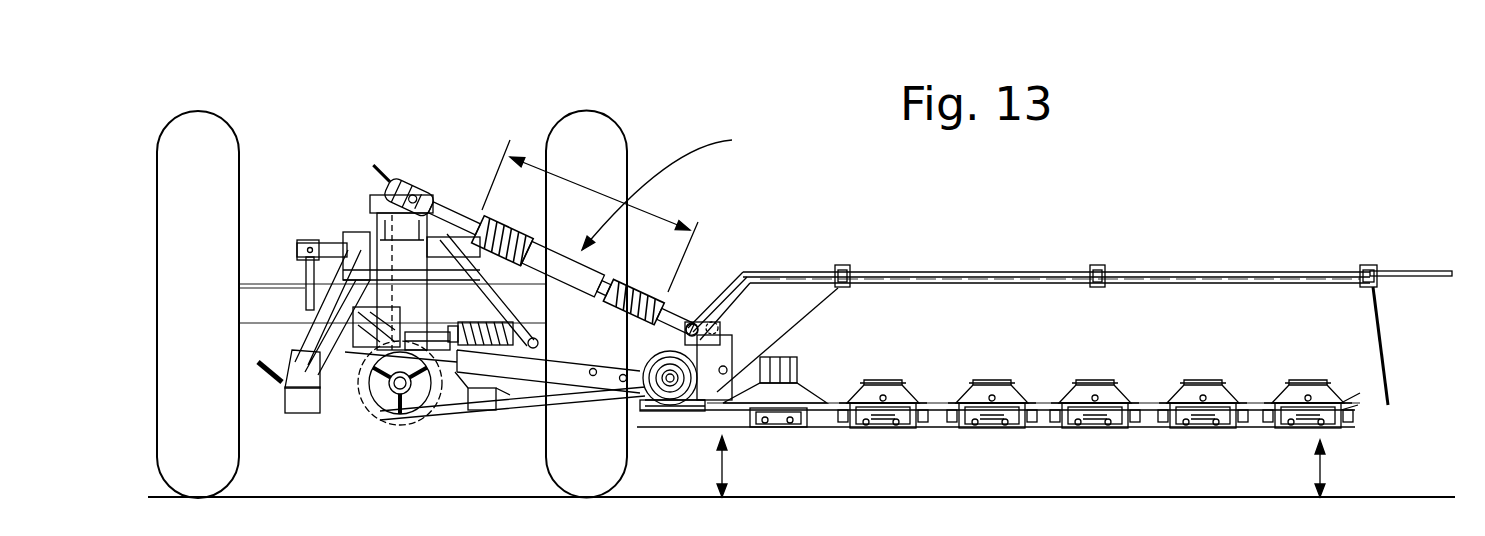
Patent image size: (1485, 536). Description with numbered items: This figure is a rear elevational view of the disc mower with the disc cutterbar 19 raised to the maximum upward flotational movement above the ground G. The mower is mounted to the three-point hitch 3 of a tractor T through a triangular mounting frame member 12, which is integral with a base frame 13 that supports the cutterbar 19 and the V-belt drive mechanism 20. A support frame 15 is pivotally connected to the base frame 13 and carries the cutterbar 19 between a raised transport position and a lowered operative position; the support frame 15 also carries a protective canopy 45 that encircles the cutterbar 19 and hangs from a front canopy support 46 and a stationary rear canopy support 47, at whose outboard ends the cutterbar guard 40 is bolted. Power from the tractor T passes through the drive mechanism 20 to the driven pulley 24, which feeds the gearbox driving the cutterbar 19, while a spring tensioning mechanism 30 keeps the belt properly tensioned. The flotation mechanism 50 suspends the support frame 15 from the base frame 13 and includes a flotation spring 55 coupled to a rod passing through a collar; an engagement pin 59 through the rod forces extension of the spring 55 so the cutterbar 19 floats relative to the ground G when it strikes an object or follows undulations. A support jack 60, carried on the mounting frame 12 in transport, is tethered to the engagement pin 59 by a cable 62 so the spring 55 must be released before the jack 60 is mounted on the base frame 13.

The three-point hitch 3 is at (300, 270).
The triangular mounting frame member 12 is at (443, 210).
The base frame 13 is at (335, 293).
The support frame 15 is at (520, 367).
The disc cutterbar 19 is at (1347, 422).
The V-belt drive mechanism 20 is at (483, 425).
The driven pulley 24 is at (720, 368).
The spring tensioning mechanism 30 is at (627, 467).
The cutterbar guard 40 is at (1433, 273).
The protective canopy 45 is at (1387, 373).
The front canopy support 46 is at (995, 270).
The rear canopy support 47 is at (1153, 287).
The flotation mechanism 50 is at (595, 235).
The flotation spring 55 is at (643, 293).
The engagement pin 59 is at (380, 196).
The support jack 60 is at (312, 345).
The cable 62 is at (372, 216).
The tractor T is at (627, 141).
The ground G is at (1398, 497).